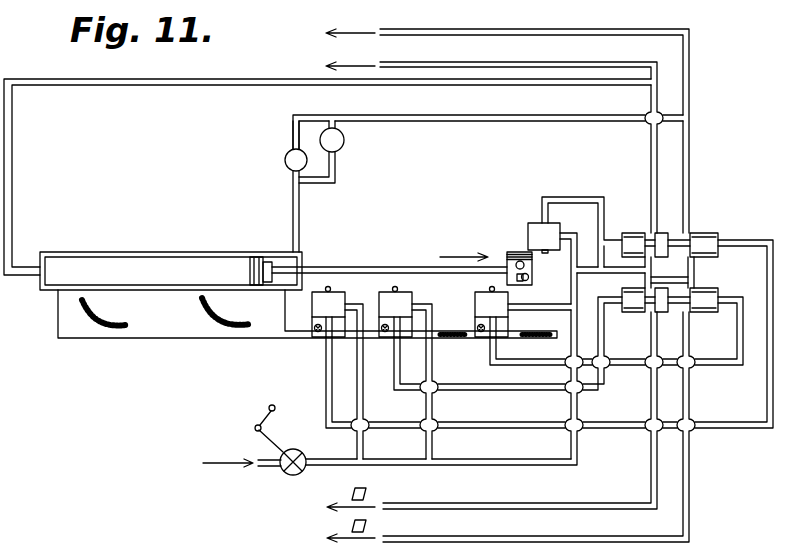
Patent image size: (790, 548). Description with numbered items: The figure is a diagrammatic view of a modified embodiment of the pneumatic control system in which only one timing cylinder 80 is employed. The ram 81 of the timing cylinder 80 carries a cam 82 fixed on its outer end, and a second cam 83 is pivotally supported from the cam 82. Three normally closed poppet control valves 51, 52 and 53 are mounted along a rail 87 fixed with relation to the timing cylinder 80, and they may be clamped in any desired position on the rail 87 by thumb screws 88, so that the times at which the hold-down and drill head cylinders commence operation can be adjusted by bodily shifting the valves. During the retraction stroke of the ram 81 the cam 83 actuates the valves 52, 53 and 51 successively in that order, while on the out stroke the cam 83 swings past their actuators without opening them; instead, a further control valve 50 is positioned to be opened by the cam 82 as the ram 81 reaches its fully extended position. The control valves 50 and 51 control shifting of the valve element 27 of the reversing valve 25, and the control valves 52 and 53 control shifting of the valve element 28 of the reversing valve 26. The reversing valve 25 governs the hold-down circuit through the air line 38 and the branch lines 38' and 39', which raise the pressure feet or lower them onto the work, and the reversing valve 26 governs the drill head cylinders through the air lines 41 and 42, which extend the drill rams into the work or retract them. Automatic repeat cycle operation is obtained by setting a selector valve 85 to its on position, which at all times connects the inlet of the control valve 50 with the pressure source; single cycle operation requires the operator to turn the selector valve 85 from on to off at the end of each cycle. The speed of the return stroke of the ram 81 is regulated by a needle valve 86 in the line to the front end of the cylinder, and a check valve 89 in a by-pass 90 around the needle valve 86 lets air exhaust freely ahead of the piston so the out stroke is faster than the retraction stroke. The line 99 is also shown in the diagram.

The reversing valve 25 is at (639, 227).
The reversing valve 26 is at (635, 320).
The valve element 27 is at (705, 231).
The valve element 28 is at (711, 320).
The air line 38 is at (492, 137).
The air line 38' is at (327, 177).
The air line 39' is at (458, 183).
The air line 41 is at (539, 502).
The air line 42 is at (556, 536).
The control valve 50 is at (546, 215).
The control valve 51 is at (343, 291).
The control valve 52 is at (476, 303).
The control valve 53 is at (411, 291).
The timing cylinder 80 is at (145, 243).
The ram 81 is at (345, 266).
The cam 82 is at (510, 252).
The cam 83 is at (512, 285).
The selector valve 85 is at (289, 479).
The needle valve 86 is at (344, 142).
The rail 87 is at (303, 339).
The thumb screw 88 is at (324, 340).
The check valve 89 is at (278, 163).
The by-pass 90 is at (284, 131).
The air line to hoist down 99 is at (690, 58).